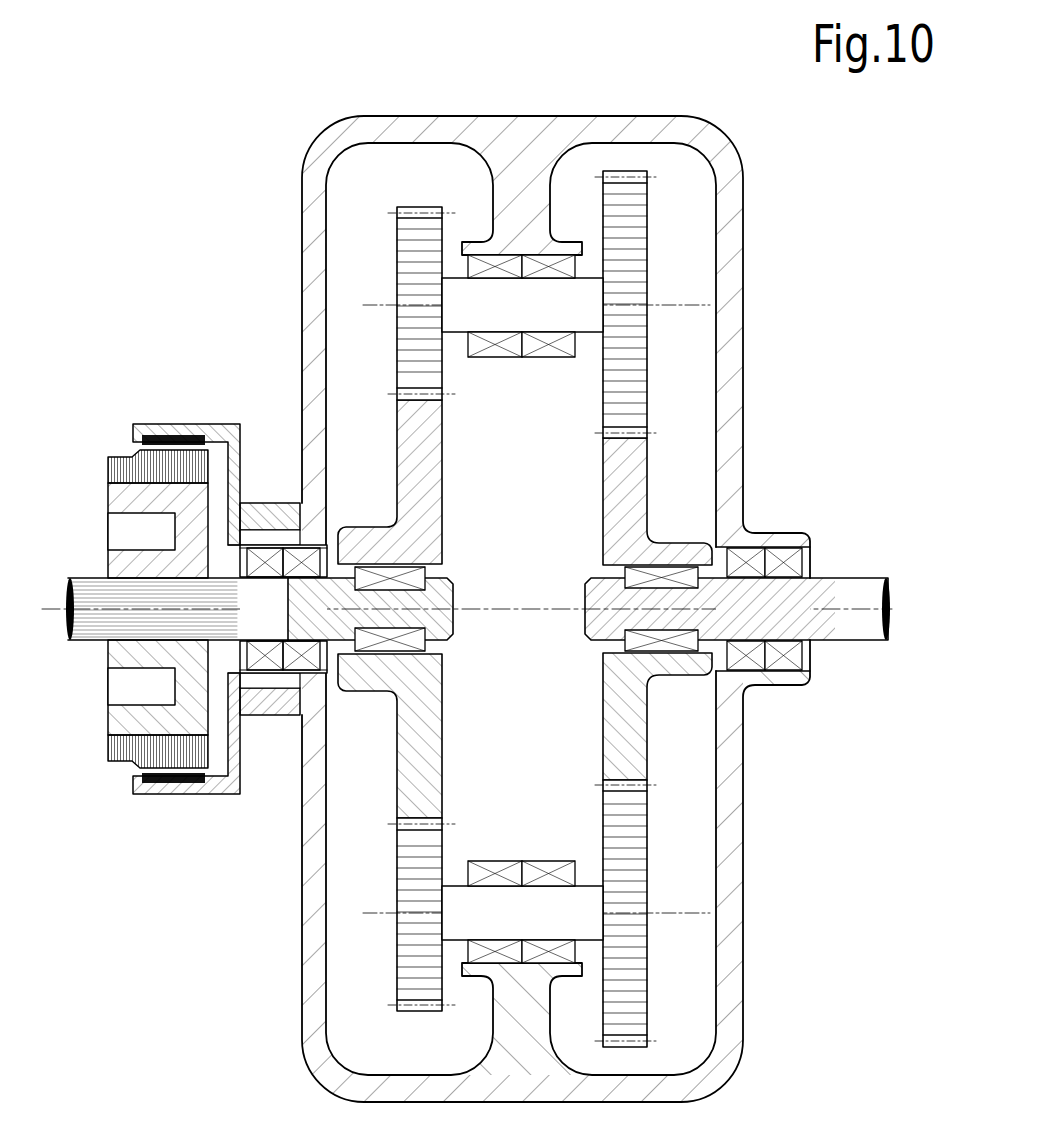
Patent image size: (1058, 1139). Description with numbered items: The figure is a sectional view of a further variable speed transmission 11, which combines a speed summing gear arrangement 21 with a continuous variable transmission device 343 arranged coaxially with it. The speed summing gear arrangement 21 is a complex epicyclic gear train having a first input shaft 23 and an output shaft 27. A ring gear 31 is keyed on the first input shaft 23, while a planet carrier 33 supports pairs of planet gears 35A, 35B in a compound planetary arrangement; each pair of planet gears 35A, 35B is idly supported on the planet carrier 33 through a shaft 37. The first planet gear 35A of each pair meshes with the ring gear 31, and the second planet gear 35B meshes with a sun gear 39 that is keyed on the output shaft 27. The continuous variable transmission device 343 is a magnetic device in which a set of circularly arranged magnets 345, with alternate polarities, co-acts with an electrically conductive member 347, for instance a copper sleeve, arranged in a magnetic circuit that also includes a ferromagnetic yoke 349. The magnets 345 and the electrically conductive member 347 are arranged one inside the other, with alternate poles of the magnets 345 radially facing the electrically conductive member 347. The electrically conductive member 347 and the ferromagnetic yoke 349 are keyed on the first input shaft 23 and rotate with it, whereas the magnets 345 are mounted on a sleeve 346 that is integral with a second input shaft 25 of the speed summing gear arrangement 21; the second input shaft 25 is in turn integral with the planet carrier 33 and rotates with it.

The variable speed transmission 11 is at (795, 281).
The speed summing gear arrangement 21 is at (369, 102).
The first input shaft 23 is at (88, 582).
The second input shaft 25 is at (255, 523).
The output shaft 27 is at (850, 580).
The ring gear 31 is at (432, 527).
The planet carrier 33 is at (513, 130).
The first planet gear 35A is at (403, 237).
The second planet gear 35B is at (645, 243).
The shaft 37 is at (502, 318).
The sun gear 39 is at (613, 733).
The continuous variable transmission device 343 is at (174, 412).
The magnets 345 is at (128, 445).
The sleeve 346 is at (208, 427).
The electrically conductive member 347 is at (125, 748).
The ferromagnetic yoke 349 is at (120, 716).